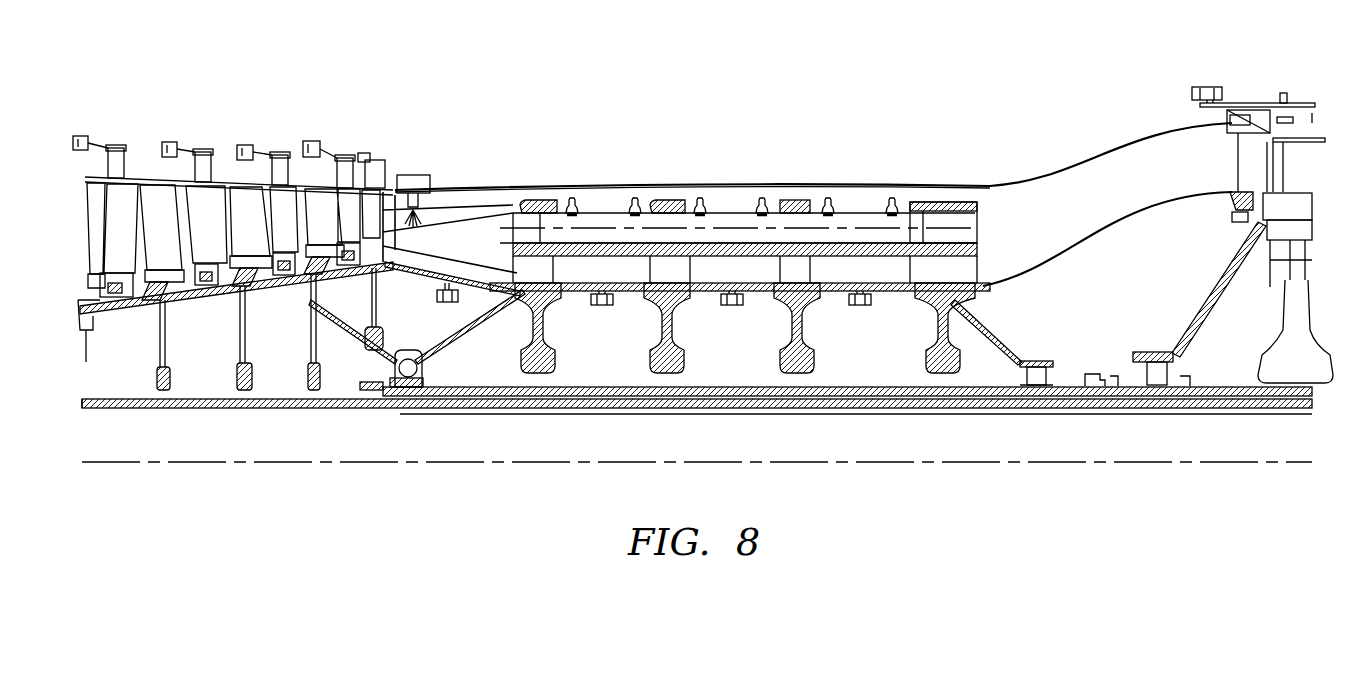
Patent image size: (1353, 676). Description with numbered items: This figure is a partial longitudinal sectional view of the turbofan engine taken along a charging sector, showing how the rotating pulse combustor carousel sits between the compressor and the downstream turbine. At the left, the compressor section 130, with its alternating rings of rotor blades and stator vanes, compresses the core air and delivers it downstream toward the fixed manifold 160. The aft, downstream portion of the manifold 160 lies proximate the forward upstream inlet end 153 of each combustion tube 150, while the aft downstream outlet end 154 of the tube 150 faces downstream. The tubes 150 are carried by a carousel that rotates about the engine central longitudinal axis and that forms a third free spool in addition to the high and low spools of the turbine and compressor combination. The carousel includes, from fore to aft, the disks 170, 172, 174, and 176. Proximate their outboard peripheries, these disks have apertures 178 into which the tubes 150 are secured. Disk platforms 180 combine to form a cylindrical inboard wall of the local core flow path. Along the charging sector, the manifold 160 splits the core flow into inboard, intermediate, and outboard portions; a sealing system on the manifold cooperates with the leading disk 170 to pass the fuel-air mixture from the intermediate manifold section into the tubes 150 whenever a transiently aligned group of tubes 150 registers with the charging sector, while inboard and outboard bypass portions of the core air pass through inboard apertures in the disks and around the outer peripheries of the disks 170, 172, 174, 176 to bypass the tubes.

The compressor section 130 is at (232, 133).
The fixed manifold 160 is at (450, 178).
The combustion tube 150 is at (745, 208).
The forward upstream inlet end 153 is at (573, 211).
The aft downstream outlet end 154 is at (927, 220).
The leading disk 170 is at (539, 374).
The second disk 172 is at (666, 374).
The third disk 174 is at (796, 375).
The aft disk 176 is at (939, 377).
The aperture 178 is at (518, 214).
The disk platform 180 is at (705, 292).